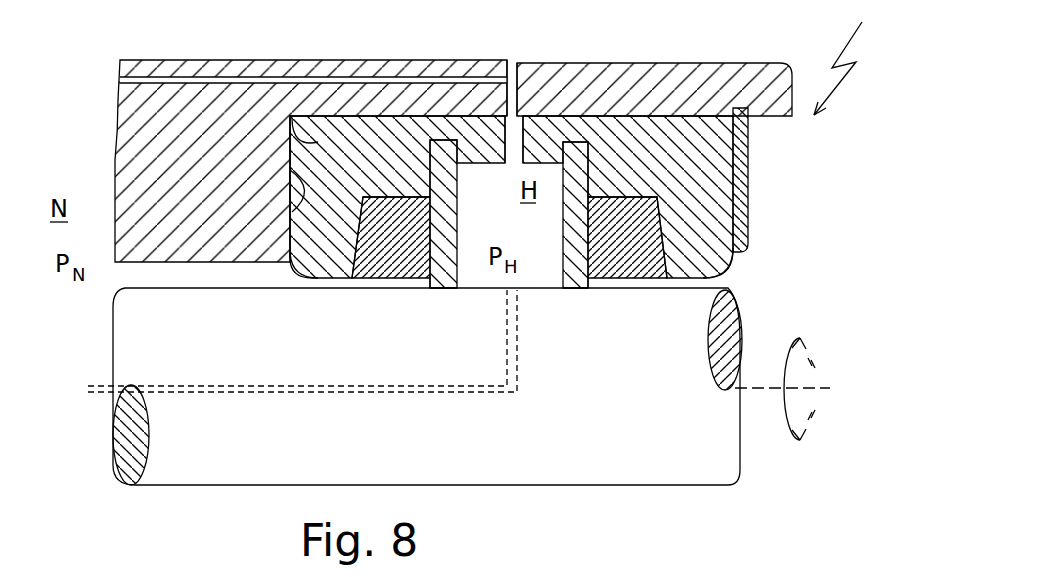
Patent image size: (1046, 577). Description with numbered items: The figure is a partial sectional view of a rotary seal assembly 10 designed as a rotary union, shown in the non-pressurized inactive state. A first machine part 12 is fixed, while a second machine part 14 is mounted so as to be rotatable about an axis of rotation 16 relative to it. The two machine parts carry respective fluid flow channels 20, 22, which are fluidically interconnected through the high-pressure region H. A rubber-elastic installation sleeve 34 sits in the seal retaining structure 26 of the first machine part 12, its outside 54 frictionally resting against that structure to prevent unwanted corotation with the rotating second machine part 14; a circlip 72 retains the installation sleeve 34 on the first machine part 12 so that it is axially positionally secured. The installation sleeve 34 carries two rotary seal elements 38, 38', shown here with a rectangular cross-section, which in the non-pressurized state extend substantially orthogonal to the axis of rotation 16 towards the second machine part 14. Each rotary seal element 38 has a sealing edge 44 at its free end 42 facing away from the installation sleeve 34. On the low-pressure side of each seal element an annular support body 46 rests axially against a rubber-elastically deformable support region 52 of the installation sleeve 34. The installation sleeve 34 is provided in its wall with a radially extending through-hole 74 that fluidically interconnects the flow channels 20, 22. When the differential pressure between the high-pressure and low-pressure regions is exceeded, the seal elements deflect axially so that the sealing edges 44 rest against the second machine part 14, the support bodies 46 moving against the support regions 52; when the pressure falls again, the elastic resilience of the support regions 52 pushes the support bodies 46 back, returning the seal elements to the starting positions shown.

The rotary seal assembly 10 is at (851, 57).
The first machine part 12 is at (120, 160).
The second machine part 14 is at (647, 407).
The axis of rotation 16 is at (757, 388).
The fluid flow channel 20 is at (510, 62).
The fluid flow channel 22 is at (150, 385).
The seal retaining structure 26 is at (305, 143).
The installation sleeve 34 is at (348, 140).
The rotary seal element 38 is at (443, 152).
The rotary seal element 38' is at (583, 151).
The free end 42 is at (468, 292).
The sealing edge 44 is at (433, 292).
The support body 46 is at (392, 215).
The support region 52 is at (325, 280).
The outside 54 is at (315, 140).
The circlip 72 is at (750, 178).
The through-hole 74 is at (513, 152).